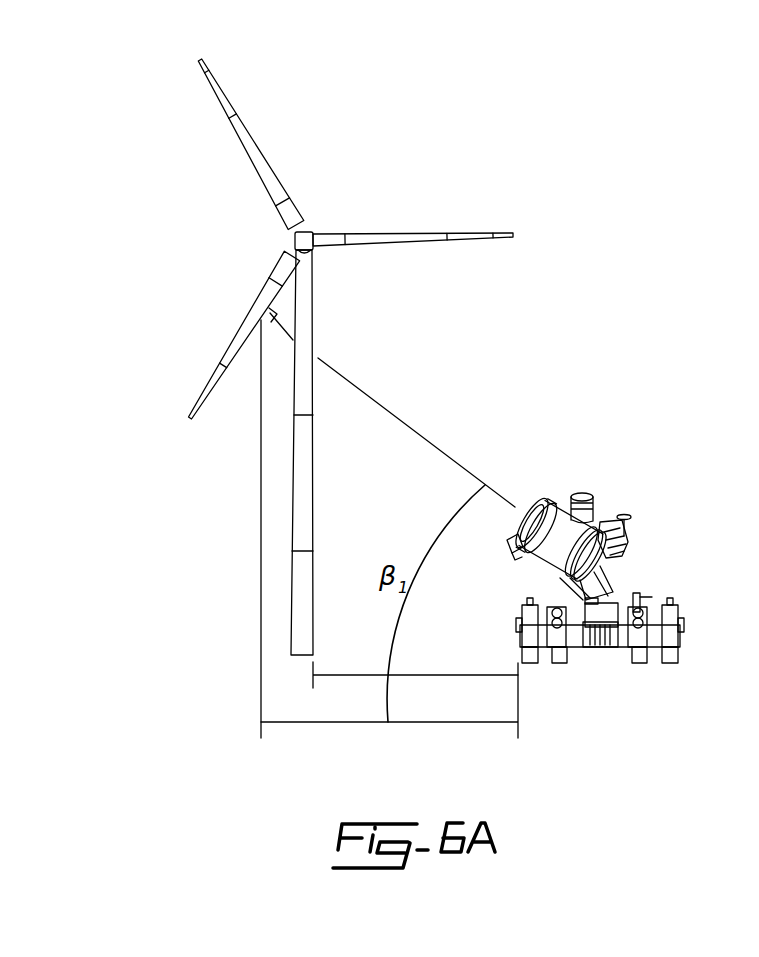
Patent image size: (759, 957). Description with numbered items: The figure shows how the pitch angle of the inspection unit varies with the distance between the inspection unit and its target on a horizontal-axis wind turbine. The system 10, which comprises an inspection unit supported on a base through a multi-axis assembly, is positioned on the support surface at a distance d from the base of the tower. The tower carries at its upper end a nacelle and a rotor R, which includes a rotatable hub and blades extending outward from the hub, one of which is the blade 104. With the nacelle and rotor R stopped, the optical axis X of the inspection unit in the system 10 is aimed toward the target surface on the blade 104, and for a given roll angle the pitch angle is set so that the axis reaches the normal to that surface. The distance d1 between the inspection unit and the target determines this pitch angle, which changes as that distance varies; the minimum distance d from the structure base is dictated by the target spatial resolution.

The blade 104 is at (238, 338).
The system 10 is at (665, 545).
The rotor R is at (324, 221).
The optical axis X is at (416, 432).
The distance d is at (415, 663).
The distance d1 is at (389, 719).